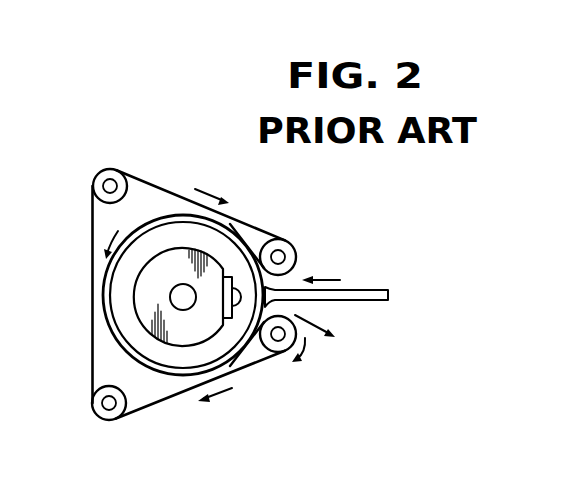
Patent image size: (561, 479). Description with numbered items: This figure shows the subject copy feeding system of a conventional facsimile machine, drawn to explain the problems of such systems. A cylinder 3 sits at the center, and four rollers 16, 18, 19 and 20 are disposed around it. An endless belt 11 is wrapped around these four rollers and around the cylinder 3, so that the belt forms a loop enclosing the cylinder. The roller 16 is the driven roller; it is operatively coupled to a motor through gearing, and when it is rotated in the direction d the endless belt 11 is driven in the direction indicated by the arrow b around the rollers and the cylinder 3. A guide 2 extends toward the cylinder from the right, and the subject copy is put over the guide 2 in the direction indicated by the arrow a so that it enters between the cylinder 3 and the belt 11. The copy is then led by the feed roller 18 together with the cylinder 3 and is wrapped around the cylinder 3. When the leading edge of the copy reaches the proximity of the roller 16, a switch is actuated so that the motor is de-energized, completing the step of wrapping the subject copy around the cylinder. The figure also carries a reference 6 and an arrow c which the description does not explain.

The guide 2 is at (365, 291).
The cylinder 3 is at (174, 218).
The core (hub) 6 is at (214, 262).
The endless belt 11 is at (92, 322).
The roller 16 is at (272, 350).
The feed roller 18 is at (293, 250).
The roller 19 is at (123, 177).
The roller 20 is at (111, 420).
The subject copy feed direction a is at (320, 280).
The belt drive direction b is at (212, 197).
The direction arrow c is at (323, 329).
The roller rotation direction d is at (303, 350).